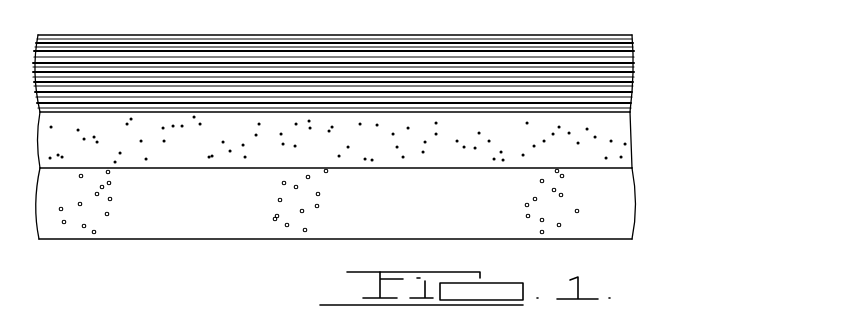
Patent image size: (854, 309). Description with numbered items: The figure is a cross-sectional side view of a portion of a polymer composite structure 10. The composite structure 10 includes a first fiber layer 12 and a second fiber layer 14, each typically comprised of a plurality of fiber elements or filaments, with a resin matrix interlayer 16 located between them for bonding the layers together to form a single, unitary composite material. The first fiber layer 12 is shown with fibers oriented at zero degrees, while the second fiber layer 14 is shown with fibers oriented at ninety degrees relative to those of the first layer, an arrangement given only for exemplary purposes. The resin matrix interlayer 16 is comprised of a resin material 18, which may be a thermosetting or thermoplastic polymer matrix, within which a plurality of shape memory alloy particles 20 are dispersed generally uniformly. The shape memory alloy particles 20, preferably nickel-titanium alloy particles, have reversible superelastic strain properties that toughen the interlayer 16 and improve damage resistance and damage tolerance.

The polymer composite structure 10 is at (396, 125).
The first fiber layer 12 is at (612, 80).
The second fiber layer 14 is at (637, 208).
The resin matrix interlayer 16 is at (391, 139).
The resin material 18 is at (616, 153).
The shape memory alloy particles 20 is at (603, 118).